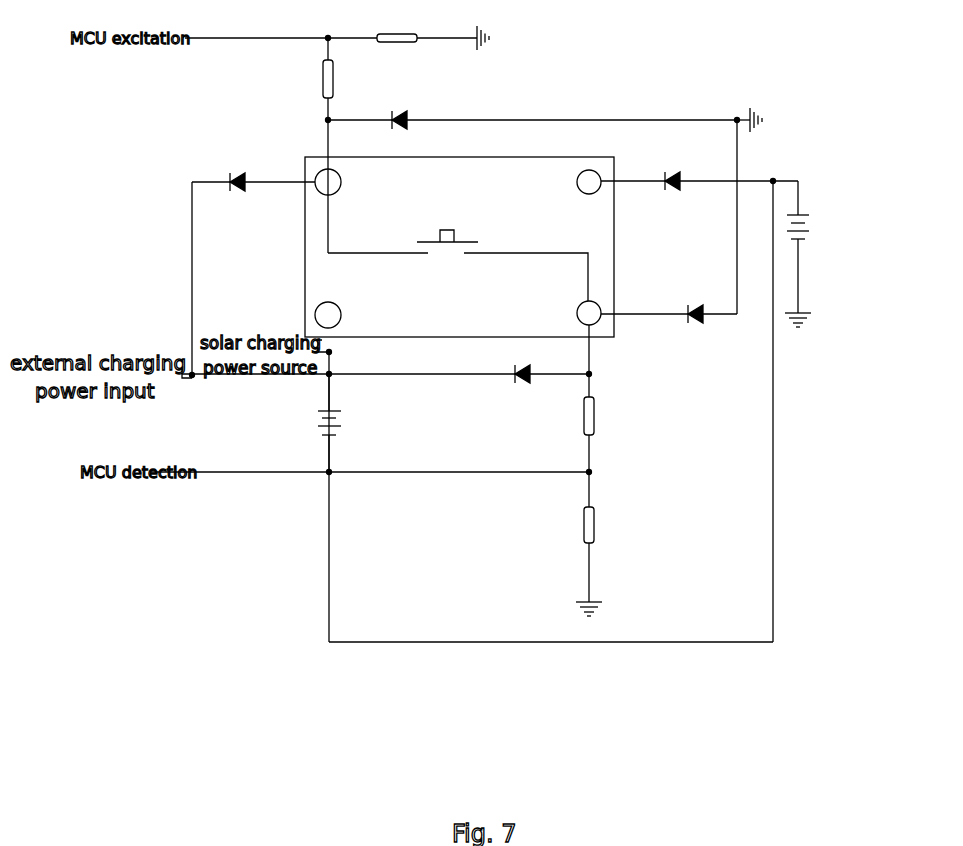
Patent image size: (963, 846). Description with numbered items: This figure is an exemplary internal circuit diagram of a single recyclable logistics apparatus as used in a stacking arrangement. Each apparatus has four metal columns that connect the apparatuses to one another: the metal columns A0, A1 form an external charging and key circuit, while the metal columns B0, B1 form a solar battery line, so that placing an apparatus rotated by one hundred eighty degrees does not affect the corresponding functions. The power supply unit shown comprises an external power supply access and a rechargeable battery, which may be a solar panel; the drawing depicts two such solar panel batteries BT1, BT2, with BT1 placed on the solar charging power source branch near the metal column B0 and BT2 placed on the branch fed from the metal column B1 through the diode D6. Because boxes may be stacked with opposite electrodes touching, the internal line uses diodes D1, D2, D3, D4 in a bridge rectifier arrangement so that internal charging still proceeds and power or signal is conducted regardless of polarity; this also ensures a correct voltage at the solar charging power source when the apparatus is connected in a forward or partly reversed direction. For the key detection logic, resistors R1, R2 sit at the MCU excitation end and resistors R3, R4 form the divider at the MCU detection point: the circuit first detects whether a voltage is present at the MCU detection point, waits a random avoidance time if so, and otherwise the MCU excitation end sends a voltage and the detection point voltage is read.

The resistor 200K R1 is at (346, 79).
The resistor 300K R2 is at (427, 37).
The resistor 200K R3 is at (609, 434).
The resistor 300K R4 is at (609, 537).
The diode D1 is at (253, 187).
The diode D2 is at (532, 123).
The diode D3 is at (385, 380).
The diode D4 is at (669, 320).
The diode D6 is at (699, 183).
The solar panel battery BT1 is at (386, 423).
The solar panel battery BT2 is at (860, 254).
The metal column A0 is at (341, 182).
The metal column A1 is at (576, 313).
The metal column B0 is at (340, 315).
The metal column B1 is at (577, 182).